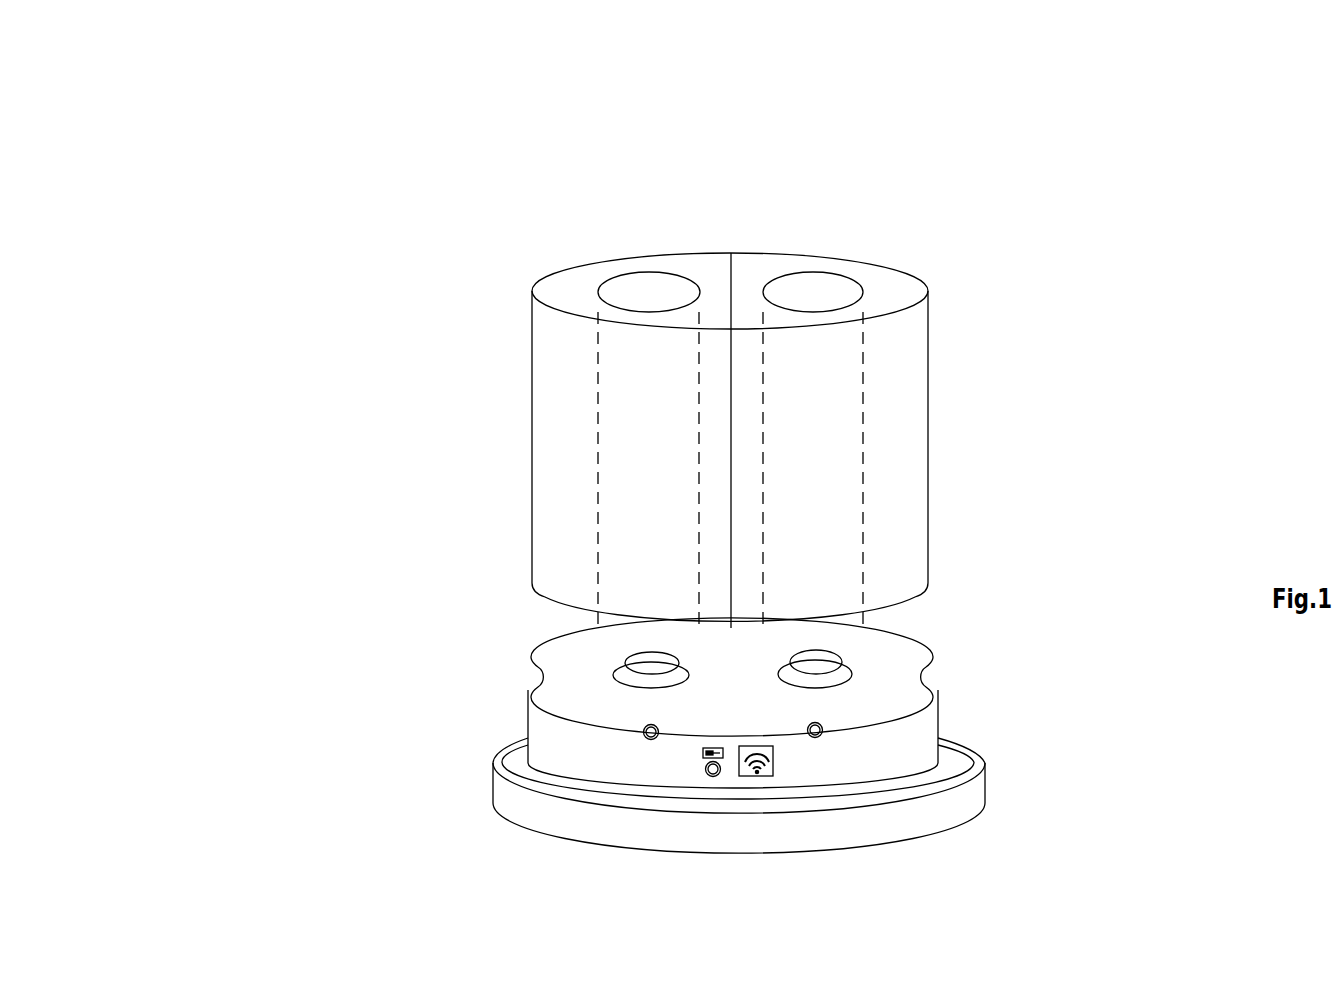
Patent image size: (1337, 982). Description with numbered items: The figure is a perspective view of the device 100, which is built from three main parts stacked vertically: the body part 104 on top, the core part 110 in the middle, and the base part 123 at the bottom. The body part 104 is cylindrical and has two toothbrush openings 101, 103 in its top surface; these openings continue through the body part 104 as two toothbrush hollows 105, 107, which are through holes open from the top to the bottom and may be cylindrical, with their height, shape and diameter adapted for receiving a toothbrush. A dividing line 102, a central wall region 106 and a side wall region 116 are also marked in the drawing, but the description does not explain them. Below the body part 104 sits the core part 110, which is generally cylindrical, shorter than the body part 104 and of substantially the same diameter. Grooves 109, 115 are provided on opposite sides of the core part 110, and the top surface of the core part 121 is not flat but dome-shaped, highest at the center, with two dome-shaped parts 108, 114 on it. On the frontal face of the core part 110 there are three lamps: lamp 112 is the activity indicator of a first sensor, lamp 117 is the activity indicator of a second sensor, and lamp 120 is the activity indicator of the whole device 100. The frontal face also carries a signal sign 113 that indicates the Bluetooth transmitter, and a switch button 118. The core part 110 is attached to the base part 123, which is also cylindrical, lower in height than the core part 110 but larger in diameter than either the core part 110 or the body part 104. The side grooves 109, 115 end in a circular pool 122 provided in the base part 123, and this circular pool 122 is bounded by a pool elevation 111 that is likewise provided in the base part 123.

The device 100 is at (232, 52).
The toothbrush opening 101 is at (613, 277).
The divider 102 is at (733, 289).
The toothbrush opening 103 is at (852, 277).
The body part 104 is at (478, 428).
The toothbrush hollow 105 is at (862, 418).
The partition wall 106 is at (731, 468).
The toothbrush hollow 107 is at (600, 530).
The dome-shaped part 108 is at (827, 655).
The groove 109 is at (935, 672).
The core part 110 is at (513, 722).
The pool elevation 111 is at (867, 780).
The lamp 112 is at (818, 737).
The signal sign 113 is at (754, 777).
The dome-shaped part 114 is at (625, 657).
The groove 115 is at (533, 672).
The base side wall 116 is at (527, 710).
The lamp 117 is at (647, 739).
The switch button 118 is at (704, 758).
The lamp 120 is at (710, 776).
The top surface of the core part 121 is at (697, 653).
The circular pool 122 is at (884, 776).
The base part 123 is at (477, 798).